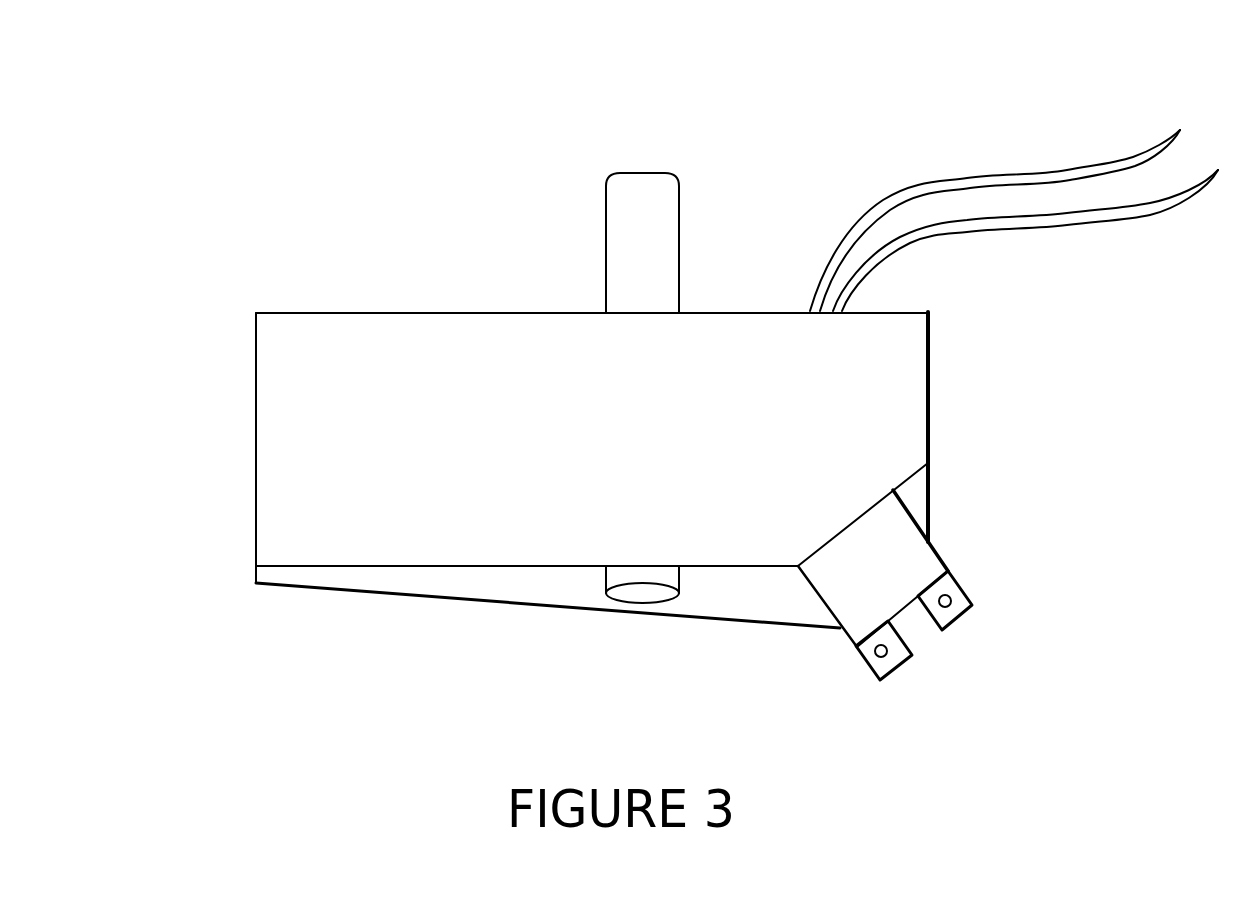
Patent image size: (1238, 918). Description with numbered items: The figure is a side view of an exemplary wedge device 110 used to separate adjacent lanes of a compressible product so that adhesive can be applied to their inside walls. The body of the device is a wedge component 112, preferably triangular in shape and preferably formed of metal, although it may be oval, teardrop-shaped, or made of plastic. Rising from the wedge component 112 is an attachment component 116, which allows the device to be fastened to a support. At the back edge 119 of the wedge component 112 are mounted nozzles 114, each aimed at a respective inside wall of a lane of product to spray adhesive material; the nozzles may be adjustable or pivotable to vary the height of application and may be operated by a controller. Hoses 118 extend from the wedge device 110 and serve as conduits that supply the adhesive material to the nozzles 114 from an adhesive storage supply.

The wedge device 110 is at (215, 93).
The wedge component 112 is at (290, 487).
The nozzle 114 is at (868, 668).
The attachment component 116 is at (627, 245).
The hose 118 is at (973, 190).
The back edge 119 is at (930, 377).